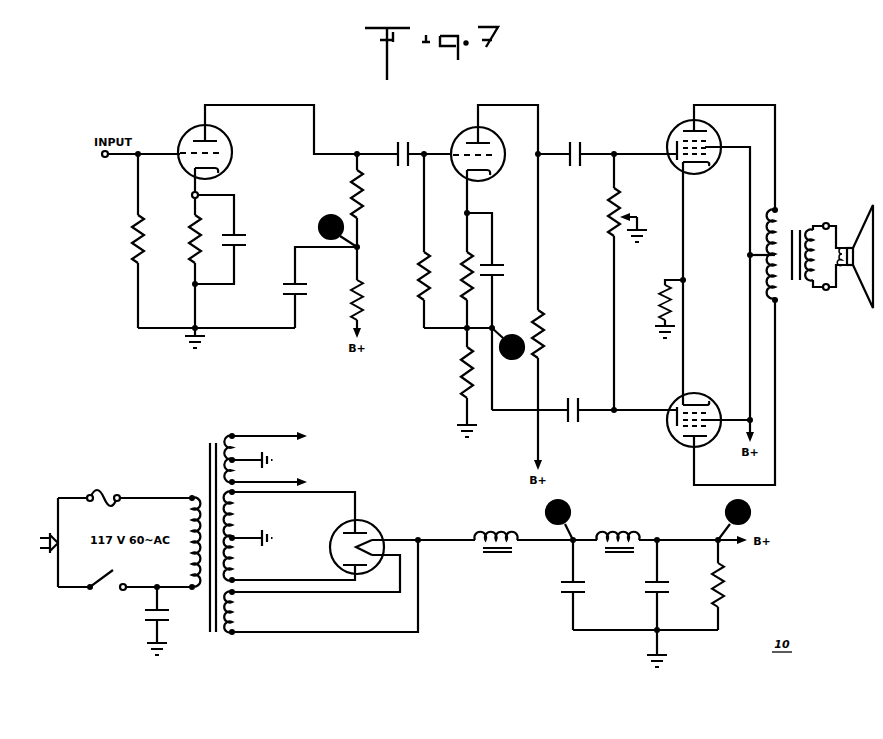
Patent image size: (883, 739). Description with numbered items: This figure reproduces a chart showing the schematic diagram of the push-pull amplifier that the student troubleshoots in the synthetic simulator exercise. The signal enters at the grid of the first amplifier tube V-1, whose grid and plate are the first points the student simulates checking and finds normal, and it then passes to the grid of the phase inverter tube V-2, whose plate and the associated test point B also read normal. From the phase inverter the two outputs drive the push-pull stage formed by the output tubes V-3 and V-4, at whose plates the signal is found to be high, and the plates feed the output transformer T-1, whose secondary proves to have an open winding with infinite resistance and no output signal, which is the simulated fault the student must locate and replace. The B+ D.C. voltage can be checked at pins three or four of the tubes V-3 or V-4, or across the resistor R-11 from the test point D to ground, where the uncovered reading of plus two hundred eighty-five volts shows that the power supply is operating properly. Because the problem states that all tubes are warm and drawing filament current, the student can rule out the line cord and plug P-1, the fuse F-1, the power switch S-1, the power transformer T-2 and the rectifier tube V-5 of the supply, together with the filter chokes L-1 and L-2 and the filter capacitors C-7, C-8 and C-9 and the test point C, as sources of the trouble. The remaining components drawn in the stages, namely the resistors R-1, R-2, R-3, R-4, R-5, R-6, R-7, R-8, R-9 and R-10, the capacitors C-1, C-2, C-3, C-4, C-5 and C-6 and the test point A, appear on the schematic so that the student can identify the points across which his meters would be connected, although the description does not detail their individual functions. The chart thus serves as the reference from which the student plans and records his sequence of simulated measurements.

The tube V-1 is at (265, 144).
The tube V-2 is at (507, 151).
The tube V-3 is at (707, 255).
The tube V-4 is at (707, 382).
The rectifier tube 80 V-5 is at (369, 534).
The 1 megohm input resistor R-1 is at (121, 241).
The 12K cathode resistor R-2 is at (178, 263).
The 25K resistor R-3 is at (374, 292).
The 270K plate load resistor R-4 is at (376, 200).
The 1 megohm grid resistor R-5 is at (404, 241).
The 5K cathode resistor R-6 is at (455, 270).
The 50K resistor R-7 is at (454, 382).
The 50K plate load resistor R-8 is at (552, 312).
The 500K potentiometer R-9 is at (610, 282).
The 330 ohm 2W cathode resistor R-10 is at (657, 302).
The resistor R-11 is at (737, 585).
The 25 MFD cathode bypass capacitor C-1 is at (233, 241).
The 8 MFD decoupling capacitor C-2 is at (320, 287).
The .01 MFD coupling capacitor C-3 is at (403, 139).
The 25 MFD cathode bypass capacitor C-4 is at (496, 311).
The .01 MFD coupling capacitor C-5 is at (614, 139).
The .01 MFD coupling capacitor C-6 is at (584, 425).
The 8 MFD filter capacitor C-7 is at (675, 585).
The 8 MFD filter capacitor C-8 is at (592, 585).
The .001 MFD line capacitor C-9 is at (172, 619).
The 10 H filter choke L-1 is at (495, 535).
The 10 H filter choke L-2 is at (617, 535).
The output transformer T-1 is at (810, 258).
The power transformer T-2 is at (299, 536).
The 1 ampere fuse F-1 is at (125, 483).
The power switch S-1 is at (125, 590).
The line plug P-1 is at (45, 542).
The test point A is at (338, 231).
The test point B is at (508, 343).
The test point C is at (559, 520).
The test point D is at (734, 520).